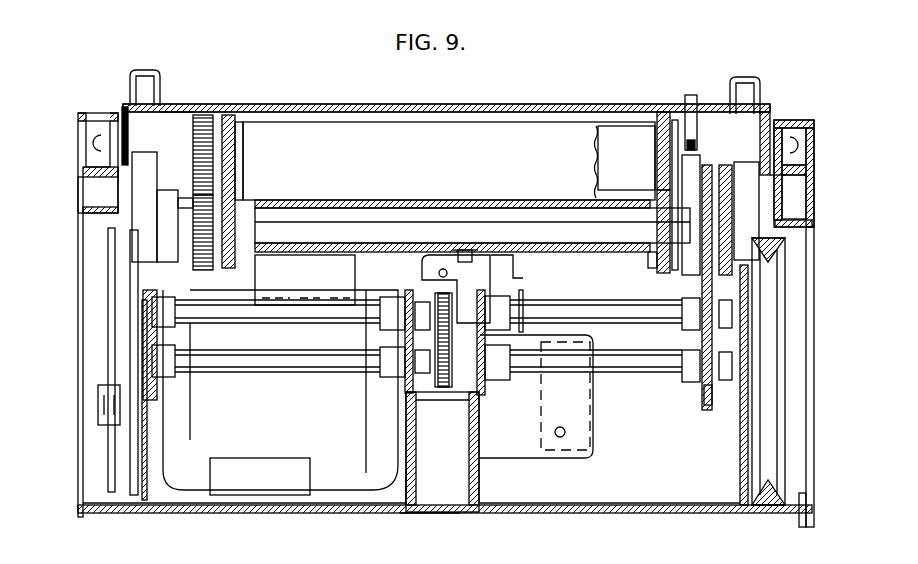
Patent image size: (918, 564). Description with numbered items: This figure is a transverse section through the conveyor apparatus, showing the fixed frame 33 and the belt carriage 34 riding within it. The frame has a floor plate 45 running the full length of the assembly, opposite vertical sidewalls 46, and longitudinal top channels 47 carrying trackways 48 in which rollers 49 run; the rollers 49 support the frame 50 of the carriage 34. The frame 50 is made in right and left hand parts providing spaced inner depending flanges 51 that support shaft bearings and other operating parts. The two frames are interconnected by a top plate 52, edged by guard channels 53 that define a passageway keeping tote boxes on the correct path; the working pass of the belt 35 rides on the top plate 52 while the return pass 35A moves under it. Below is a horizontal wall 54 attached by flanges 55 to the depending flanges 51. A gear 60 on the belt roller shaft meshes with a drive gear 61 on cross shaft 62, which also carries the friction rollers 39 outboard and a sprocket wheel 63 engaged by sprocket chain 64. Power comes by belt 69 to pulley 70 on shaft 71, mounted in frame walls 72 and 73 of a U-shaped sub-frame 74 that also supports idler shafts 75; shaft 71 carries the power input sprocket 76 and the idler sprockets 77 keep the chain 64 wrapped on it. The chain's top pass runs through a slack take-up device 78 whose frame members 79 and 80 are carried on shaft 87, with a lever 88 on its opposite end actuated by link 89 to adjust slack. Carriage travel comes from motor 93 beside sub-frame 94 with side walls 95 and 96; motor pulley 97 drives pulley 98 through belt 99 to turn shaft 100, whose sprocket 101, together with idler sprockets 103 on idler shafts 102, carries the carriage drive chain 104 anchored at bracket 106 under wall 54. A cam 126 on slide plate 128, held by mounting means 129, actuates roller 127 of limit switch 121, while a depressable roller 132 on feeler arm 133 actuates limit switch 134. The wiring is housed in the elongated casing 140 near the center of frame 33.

The frame 33 is at (825, 118).
The carriage 34 is at (254, 90).
The belt 35 is at (499, 104).
The return pass of the belt 35A is at (412, 198).
The friction rollers 39 is at (150, 150).
The floor plate 45 is at (243, 515).
The vertical sidewalls 46 is at (78, 462).
The top channels 47 is at (80, 152).
The trackways 48 is at (78, 200).
The rollers 49 is at (95, 128).
The frame of the carriage 50 is at (125, 106).
The depending flanges 51 is at (240, 150).
The top plate 52 is at (176, 105).
The guard channels 53 is at (143, 68).
The horizontal wall 54 is at (345, 256).
The flanges 55 is at (252, 265).
The gear 60 is at (206, 112).
The drive gear 61 is at (237, 172).
The cross shaft 62 is at (556, 198).
The sprocket wheel 63 is at (700, 268).
The sprocket chain 64 is at (697, 405).
The belt 69 is at (767, 520).
The pulley 70 is at (779, 287).
The shaft 71 is at (628, 374).
The frame wall 72 is at (740, 467).
The frame wall 73 is at (481, 478).
The sub-frame 74 is at (645, 503).
The idler shafts 75 is at (603, 312).
The power input sprocket 76 is at (709, 405).
The idler sprockets 77 is at (697, 325).
The slack take-up device 78 is at (716, 145).
The frame member 79 is at (735, 200).
The frame member 80 is at (655, 186).
The shaft 87 is at (343, 186).
The lever 88 is at (200, 203).
The link 89 is at (210, 270).
The motor 93 is at (280, 392).
The sub-frame 94 is at (167, 513).
The side wall 95 is at (413, 490).
The side wall 96 is at (147, 463).
The motor pulley 97 is at (110, 405).
The pulley 98 is at (103, 268).
The belt 99 is at (115, 295).
The shaft 100 is at (245, 372).
The sprocket 101 is at (433, 385).
The idler shafts 102 is at (232, 322).
The idler sprocket 103 is at (393, 333).
The carriage drive chain 104 is at (453, 402).
The bracket 106 is at (425, 290).
The limit switch 121 is at (540, 390).
The cam 126 is at (519, 275).
The roller 127 is at (523, 297).
The slide plate 128 is at (462, 198).
The mounting means 129 is at (500, 198).
The depressable roller 132 is at (694, 95).
The feeler arm 133 is at (667, 112).
The limit switch 134 is at (596, 143).
The casing 140 is at (429, 513).